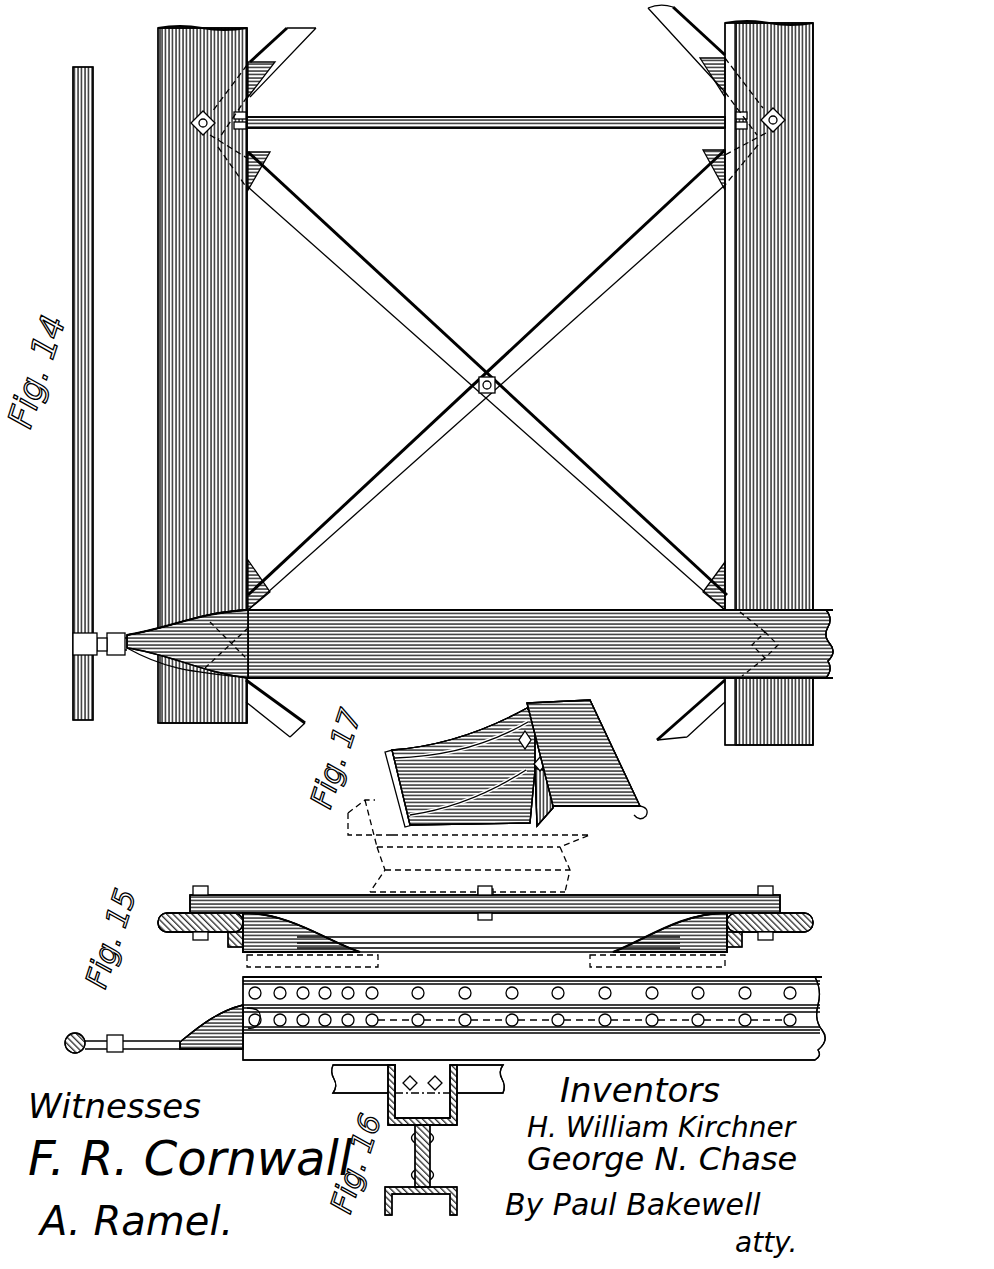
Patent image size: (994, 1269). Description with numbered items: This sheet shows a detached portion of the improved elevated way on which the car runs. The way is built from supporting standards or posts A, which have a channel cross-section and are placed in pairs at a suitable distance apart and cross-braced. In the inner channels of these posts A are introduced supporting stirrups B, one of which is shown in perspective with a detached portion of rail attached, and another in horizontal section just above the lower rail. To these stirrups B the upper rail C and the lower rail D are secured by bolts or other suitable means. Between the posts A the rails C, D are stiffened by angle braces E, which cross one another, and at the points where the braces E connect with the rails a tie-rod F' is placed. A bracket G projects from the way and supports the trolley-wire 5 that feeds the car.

In FIG. 14, the trolley-wire 5 is at (100, 382).
In FIG. 15, the trolley-wire 5 is at (68, 1035).
In FIG. 14, the supporting standard or post A is at (447, 612).
In FIG. 15, the supporting standard or post A is at (265, 1030).
In FIG. 16, the supporting standard or post A is at (420, 1195).
In FIG. 17, the supporting stirrup B is at (422, 752).
In FIG. 15, the supporting stirrup B is at (265, 935).
In FIG. 16, the supporting stirrup B is at (420, 1100).
In FIG. 14, the upper rail C is at (176, 332).
In FIG. 15, the upper rail C is at (180, 912).
In FIG. 14, the lower rail D is at (740, 426).
In FIG. 17, the lower rail D is at (600, 803).
In FIG. 15, the lower rail D is at (790, 912).
In FIG. 16, the lower rail D is at (482, 1085).
In FIG. 14, the angle brace E is at (446, 413).
In FIG. 15, the angle brace E is at (305, 895).
In FIG. 14, the tie-rod F' is at (486, 94).
In FIG. 15, the tie-rod F' is at (485, 890).
In FIG. 14, the bracket G is at (152, 628).
In FIG. 15, the bracket G is at (183, 1040).